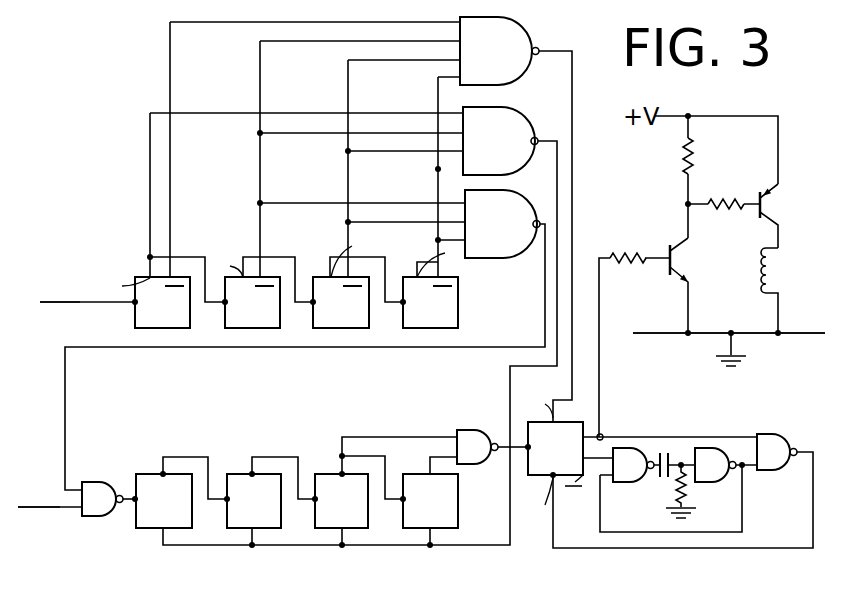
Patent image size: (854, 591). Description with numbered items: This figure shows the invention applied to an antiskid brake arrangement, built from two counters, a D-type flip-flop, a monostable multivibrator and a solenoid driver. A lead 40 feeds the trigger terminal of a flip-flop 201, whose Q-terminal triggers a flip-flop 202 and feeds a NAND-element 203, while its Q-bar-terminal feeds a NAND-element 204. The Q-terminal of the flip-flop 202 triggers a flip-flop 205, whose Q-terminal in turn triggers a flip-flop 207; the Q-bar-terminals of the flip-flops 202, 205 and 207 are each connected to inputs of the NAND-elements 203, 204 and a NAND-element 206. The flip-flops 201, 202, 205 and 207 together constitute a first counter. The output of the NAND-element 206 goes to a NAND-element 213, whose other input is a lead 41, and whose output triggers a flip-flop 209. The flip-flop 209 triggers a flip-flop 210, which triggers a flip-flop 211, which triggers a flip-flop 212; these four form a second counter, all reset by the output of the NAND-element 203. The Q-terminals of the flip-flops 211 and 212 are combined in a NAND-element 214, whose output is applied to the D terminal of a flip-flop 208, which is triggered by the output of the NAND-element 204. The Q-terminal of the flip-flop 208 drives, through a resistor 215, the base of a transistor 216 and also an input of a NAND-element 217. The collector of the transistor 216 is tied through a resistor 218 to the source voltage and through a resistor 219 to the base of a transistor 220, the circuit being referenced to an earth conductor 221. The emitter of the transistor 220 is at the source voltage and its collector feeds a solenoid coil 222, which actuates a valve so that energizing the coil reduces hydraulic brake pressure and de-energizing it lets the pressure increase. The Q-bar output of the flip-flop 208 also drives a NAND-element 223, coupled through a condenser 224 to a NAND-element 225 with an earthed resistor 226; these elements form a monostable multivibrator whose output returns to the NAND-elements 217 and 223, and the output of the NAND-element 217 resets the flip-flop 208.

The lead 40 is at (80, 302).
The lead 41 is at (50, 507).
The flip-flop 201 is at (143, 277).
The flip-flop 202 is at (248, 277).
The NAND-element 203 is at (506, 123).
The NAND-element 204 is at (518, 42).
The flip-flop 205 is at (318, 277).
The NAND-element 206 is at (506, 208).
The flip-flop 207 is at (402, 277).
The flip-flop 208 is at (528, 440).
The flip-flop 209 is at (136, 518).
The flip-flop 210 is at (233, 474).
The flip-flop 211 is at (322, 474).
The flip-flop 212 is at (413, 474).
The NAND-element 213 is at (95, 471).
The NAND-element 214 is at (486, 465).
The resistor 215 is at (616, 258).
The transistor 216 is at (682, 252).
The NAND-element 217 is at (783, 470).
The resistor 218 is at (682, 165).
The resistor 219 is at (726, 200).
The transistor 220 is at (770, 204).
The earth conductor 221 is at (652, 334).
The solenoid coil 222 is at (766, 288).
The NAND-element 223 is at (640, 448).
The condenser 224 is at (698, 428).
The NAND-element 225 is at (714, 448).
The resistor 226 is at (678, 490).